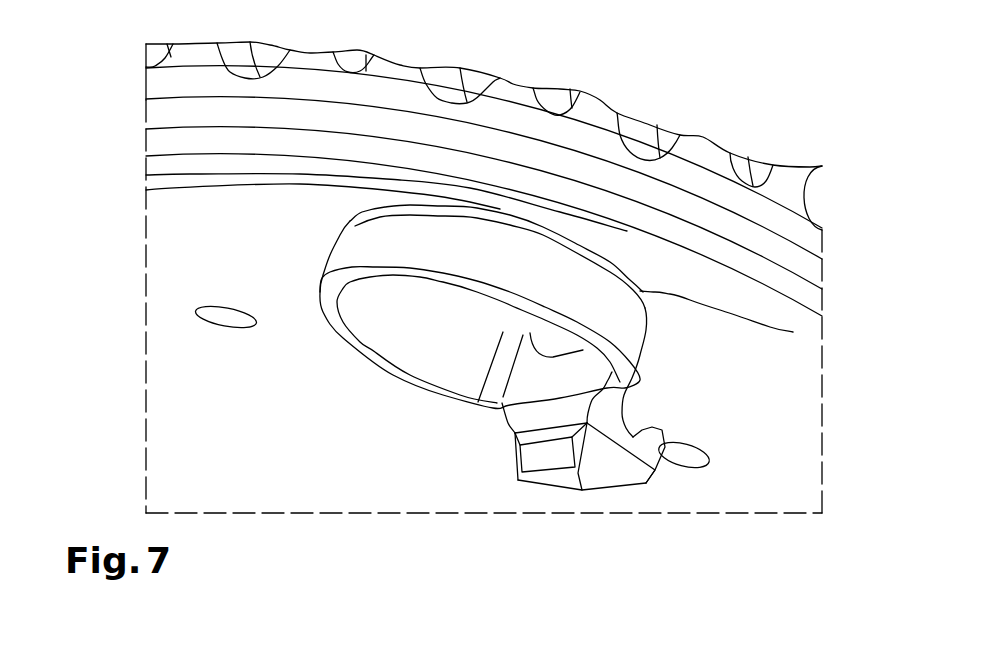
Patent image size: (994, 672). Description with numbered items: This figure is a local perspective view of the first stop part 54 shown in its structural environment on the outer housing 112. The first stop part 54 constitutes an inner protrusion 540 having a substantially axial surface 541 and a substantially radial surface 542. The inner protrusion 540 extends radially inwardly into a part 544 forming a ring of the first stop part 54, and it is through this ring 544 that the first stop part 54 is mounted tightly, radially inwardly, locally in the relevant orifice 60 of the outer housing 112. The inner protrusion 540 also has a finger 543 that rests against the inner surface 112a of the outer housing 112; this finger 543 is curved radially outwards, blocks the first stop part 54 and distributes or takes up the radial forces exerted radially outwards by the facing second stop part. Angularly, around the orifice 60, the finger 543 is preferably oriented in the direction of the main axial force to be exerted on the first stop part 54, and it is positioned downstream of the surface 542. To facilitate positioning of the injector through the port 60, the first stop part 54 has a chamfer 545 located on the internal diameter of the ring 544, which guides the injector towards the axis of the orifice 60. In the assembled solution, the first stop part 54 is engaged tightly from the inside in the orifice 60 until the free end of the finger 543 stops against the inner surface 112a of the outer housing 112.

The first stop part 54 is at (568, 454).
The inner protrusion 540 is at (623, 460).
The substantially axial surface 541 is at (591, 482).
The substantially radial surface 542 is at (527, 453).
The finger 543 is at (664, 424).
The part forming a ring 544 is at (483, 270).
The chamfer 545 is at (793, 332).
The orifice 60 is at (437, 292).
The outer housing 112 is at (720, 388).
The inner surface 112a is at (773, 343).